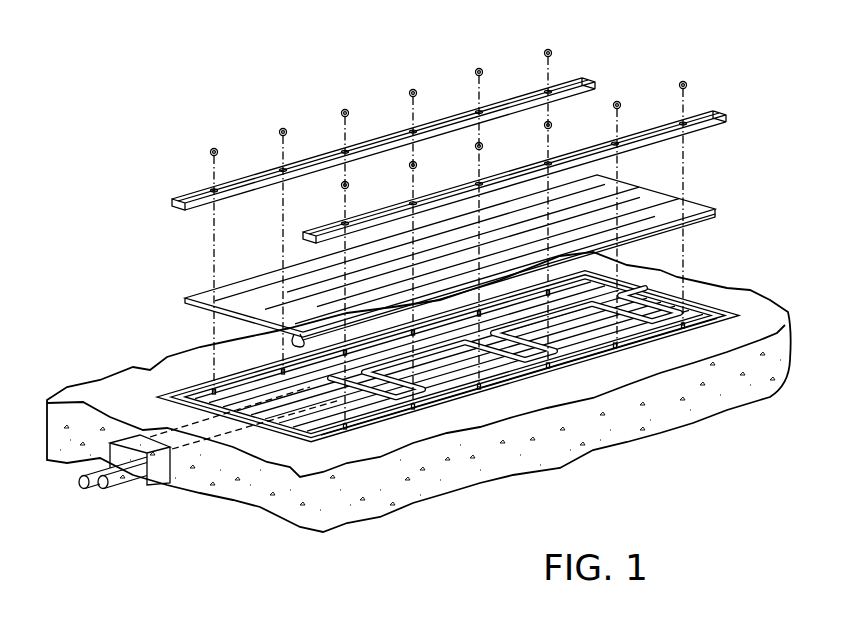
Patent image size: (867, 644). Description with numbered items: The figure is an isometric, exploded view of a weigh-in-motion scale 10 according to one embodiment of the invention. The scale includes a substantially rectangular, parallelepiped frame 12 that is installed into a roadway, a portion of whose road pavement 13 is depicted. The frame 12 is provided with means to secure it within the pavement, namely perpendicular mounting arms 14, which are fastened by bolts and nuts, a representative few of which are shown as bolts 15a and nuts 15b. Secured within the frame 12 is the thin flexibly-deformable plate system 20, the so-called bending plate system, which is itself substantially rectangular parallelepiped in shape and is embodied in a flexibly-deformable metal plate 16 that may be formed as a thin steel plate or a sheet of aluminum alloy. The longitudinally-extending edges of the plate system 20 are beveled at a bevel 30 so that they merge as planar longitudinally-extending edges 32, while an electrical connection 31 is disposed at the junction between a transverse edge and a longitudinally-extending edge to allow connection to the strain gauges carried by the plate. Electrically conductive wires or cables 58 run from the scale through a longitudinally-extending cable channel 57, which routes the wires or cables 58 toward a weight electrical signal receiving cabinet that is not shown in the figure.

The weigh-in-motion scale 10 is at (112, 333).
The rectangular parallelepiped frame 12 is at (533, 352).
The road pavement 13 is at (620, 430).
The perpendicular mounting arms 14 is at (270, 340).
The bolts 15a is at (283, 371).
The nuts 15b is at (345, 110).
The flexibly-deformable metal plate 16 is at (218, 305).
The thin flexibly-deformable plate system 20 is at (458, 260).
The bevel 30 is at (715, 208).
The electrical connection 31 is at (302, 246).
The planar longitudinally-extending edges 32 is at (712, 212).
The longitudinally-extending cable channel 57 is at (163, 485).
The electrically conductive wires or cables 58 is at (87, 487).